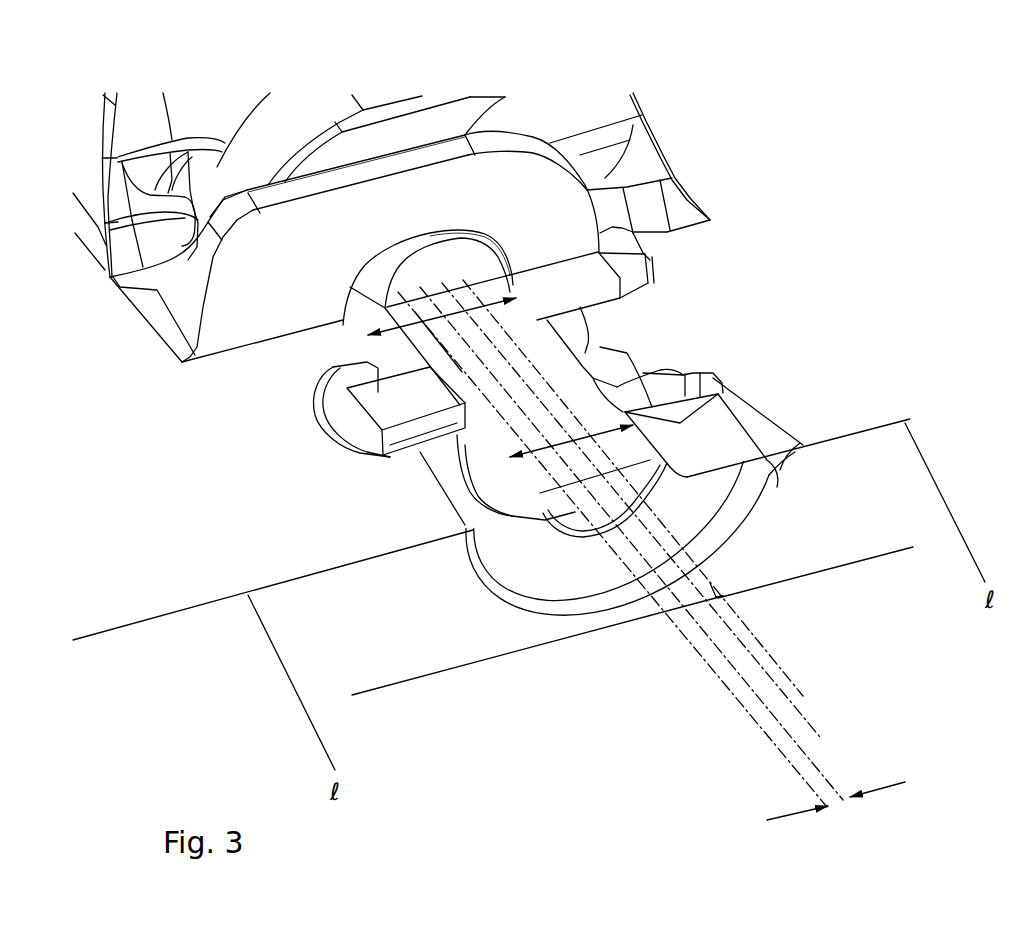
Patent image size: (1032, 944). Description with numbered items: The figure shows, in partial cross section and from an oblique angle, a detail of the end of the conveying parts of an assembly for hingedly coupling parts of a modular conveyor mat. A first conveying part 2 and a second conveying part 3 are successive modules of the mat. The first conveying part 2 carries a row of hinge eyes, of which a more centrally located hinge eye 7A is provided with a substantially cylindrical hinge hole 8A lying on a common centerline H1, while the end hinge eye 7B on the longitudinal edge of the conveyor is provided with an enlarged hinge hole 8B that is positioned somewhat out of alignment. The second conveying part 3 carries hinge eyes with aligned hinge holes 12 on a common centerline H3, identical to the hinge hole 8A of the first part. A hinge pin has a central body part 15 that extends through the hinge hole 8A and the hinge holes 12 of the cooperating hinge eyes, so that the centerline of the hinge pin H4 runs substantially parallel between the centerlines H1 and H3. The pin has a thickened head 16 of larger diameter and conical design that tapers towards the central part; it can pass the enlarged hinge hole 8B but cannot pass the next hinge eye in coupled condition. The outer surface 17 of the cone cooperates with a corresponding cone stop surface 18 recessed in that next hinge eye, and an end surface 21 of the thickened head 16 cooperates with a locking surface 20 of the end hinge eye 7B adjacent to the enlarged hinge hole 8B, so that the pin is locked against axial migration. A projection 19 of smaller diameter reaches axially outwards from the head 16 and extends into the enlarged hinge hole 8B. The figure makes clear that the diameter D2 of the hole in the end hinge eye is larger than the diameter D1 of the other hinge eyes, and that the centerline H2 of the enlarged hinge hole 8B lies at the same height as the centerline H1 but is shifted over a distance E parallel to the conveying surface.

The first conveying part 2 is at (870, 512).
The second conveying part 3 is at (373, 650).
The more centrally located hinge eye 7A is at (507, 183).
The end hinge eye 7B is at (715, 440).
The hinge hole 8A is at (363, 262).
The enlarged hinge hole 8B is at (523, 563).
The hinge hole 12 is at (593, 357).
The central body part 15 is at (523, 320).
The thickened head 16 is at (630, 380).
The outer surface 17 is at (392, 455).
The cone stop surface 18 is at (390, 455).
The projection 19 is at (625, 412).
The locking surface 20 is at (680, 423).
The end surface 21 is at (643, 373).
The diameter of the other hinge eyes D1 is at (483, 303).
The diameter of the hole in the end hinge eye D2 is at (593, 438).
The distance E is at (836, 808).
The centerline of the hinge holes H1 is at (817, 762).
The centerline of the enlarged hinge hole H2 is at (795, 767).
The centerline of the second-row hinge holes H3 is at (805, 695).
The centerline of the hinge pin H4 is at (813, 727).